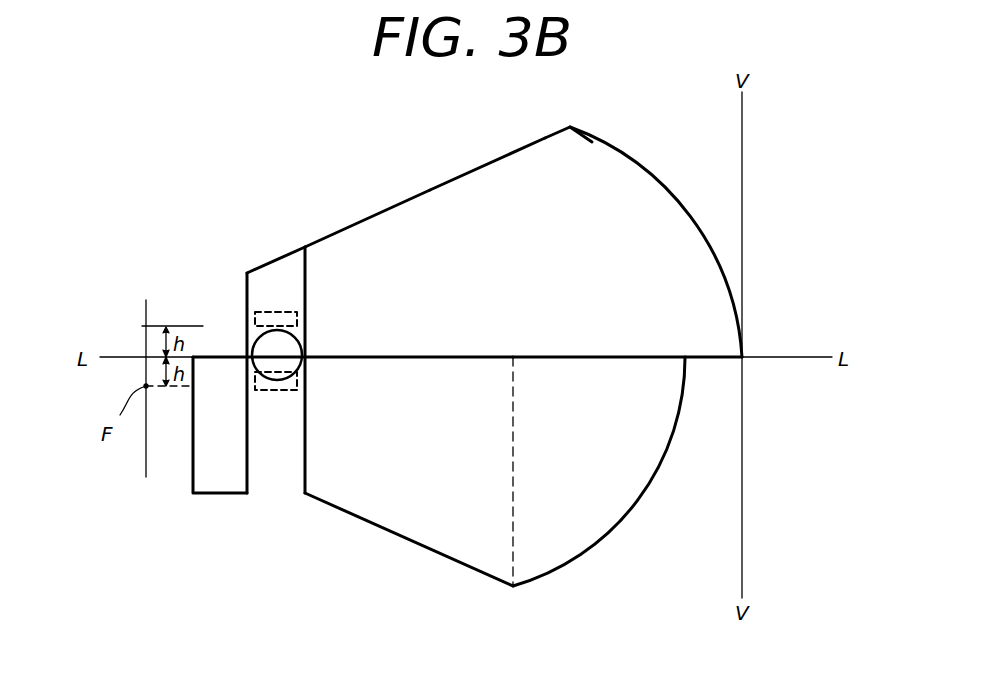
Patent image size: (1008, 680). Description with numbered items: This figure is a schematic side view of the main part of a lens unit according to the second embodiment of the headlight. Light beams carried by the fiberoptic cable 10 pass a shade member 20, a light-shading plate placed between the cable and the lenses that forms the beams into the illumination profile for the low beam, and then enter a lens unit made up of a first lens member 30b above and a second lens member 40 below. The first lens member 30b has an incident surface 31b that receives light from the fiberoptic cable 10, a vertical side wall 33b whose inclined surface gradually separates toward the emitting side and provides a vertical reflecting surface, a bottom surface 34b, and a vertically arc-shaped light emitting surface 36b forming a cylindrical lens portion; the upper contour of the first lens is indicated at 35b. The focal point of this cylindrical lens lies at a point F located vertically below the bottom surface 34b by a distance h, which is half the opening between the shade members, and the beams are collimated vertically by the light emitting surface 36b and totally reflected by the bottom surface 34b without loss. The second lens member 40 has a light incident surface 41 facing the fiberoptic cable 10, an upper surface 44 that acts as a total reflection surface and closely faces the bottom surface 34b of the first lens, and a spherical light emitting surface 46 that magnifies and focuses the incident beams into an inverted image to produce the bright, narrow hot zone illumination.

The fiberoptic cable 10 is at (295, 340).
The shade member 20 is at (293, 313).
The first lens member 30b is at (523, 167).
The incident surface 31b is at (280, 272).
The vertical side wall 33b is at (390, 240).
The bottom surface 34b is at (533, 355).
The third reflecting surface portion 35b is at (443, 178).
The light emitting surface 36b is at (637, 167).
The second lens member 40 is at (407, 525).
The light incident surface 41 is at (274, 480).
The upper surface 44 is at (408, 360).
The light emitting surface 46 is at (625, 512).